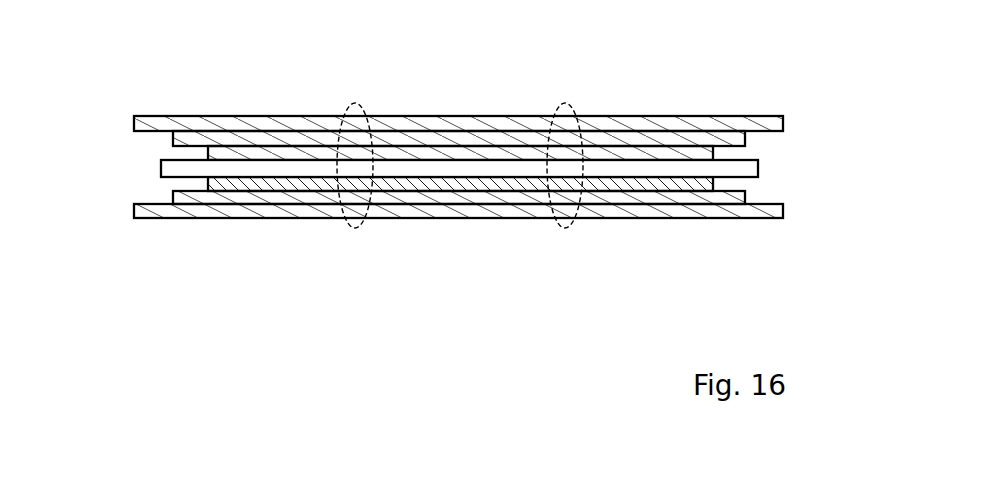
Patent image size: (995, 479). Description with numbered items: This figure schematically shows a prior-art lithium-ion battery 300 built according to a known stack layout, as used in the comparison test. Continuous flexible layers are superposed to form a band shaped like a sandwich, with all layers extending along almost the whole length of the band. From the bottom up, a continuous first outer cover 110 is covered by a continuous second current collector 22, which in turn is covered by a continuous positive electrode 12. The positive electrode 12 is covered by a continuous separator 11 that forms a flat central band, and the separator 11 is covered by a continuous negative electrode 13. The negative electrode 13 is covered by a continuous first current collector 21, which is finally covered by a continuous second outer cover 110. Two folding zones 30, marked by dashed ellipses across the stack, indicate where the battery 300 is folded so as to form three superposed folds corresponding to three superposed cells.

The lithium-ion battery 300 is at (126, 59).
The outer cover 110 is at (783, 123).
The first current collector 21 is at (602, 137).
The second current collector 22 is at (602, 202).
The negative electrode 13 is at (675, 152).
The positive electrode 12 is at (673, 183).
The separator 11 is at (758, 168).
The folding zone 30 is at (349, 104).